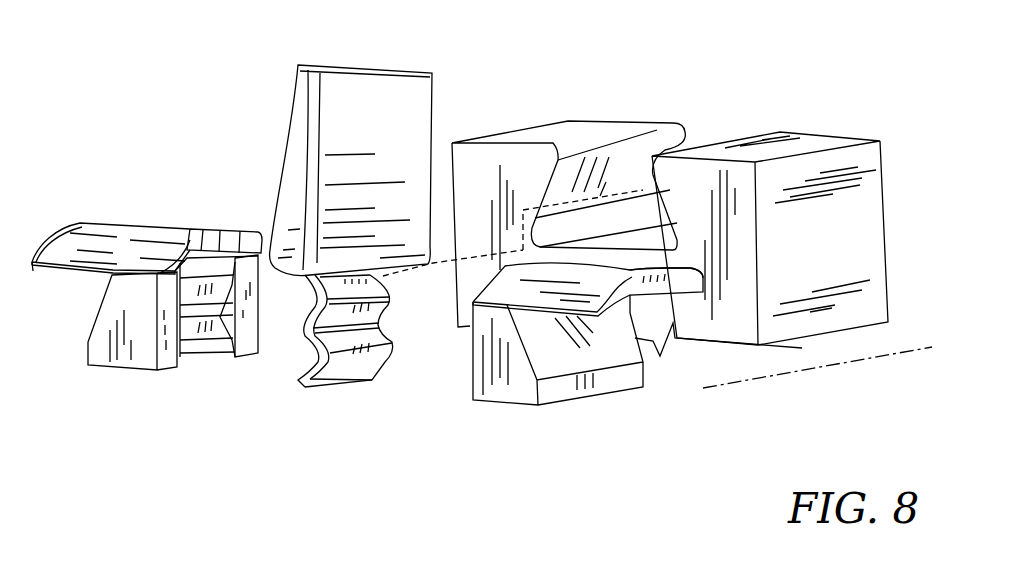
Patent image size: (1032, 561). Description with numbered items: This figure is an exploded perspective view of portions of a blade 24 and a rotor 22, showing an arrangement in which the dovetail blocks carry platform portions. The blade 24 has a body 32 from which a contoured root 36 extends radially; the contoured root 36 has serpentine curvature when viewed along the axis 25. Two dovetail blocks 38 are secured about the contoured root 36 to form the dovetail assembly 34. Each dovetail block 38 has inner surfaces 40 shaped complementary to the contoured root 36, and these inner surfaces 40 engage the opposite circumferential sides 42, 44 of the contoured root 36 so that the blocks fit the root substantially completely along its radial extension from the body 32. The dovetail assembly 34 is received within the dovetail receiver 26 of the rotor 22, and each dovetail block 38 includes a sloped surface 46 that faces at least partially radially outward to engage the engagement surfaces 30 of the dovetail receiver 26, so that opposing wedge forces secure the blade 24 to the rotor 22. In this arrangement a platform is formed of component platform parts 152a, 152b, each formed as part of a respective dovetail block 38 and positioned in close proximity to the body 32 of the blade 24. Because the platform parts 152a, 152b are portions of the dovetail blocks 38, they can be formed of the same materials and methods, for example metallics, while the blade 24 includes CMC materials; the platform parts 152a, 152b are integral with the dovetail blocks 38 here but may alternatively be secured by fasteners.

The rotor 22 is at (849, 129).
The blade 24 is at (439, 79).
The axis 25 is at (912, 353).
The dovetail receiver 26 is at (622, 196).
The engagement surfaces 30 is at (570, 170).
The body 32 is at (377, 248).
The dovetail assembly 34 is at (191, 396).
The contoured root 36 is at (346, 366).
The dovetail blocks 38 is at (425, 287).
The inner surfaces 40 is at (207, 274).
The circumferential side 42 is at (392, 366).
The circumferential side 44 is at (305, 360).
The sloped surface 46 is at (100, 305).
The platform part 152a is at (31, 258).
The platform part 152b is at (683, 264).